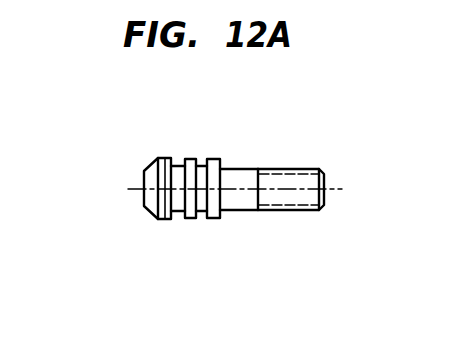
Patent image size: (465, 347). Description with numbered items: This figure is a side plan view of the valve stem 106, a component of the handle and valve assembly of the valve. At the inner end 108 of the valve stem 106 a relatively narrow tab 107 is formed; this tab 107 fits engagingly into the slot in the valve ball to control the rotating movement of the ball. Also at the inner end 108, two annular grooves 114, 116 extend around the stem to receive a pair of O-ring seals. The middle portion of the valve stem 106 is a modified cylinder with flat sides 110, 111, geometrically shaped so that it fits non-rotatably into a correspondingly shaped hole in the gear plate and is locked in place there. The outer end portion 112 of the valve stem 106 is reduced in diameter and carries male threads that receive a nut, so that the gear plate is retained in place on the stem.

The valve stem 106 is at (227, 195).
The tab 107 is at (143, 182).
The inner end 108 is at (181, 145).
The flat side 110 is at (232, 168).
The flat side 111 is at (233, 211).
The outer end portion 112 is at (308, 211).
The annular groove 114 is at (178, 214).
The annular groove 116 is at (190, 220).